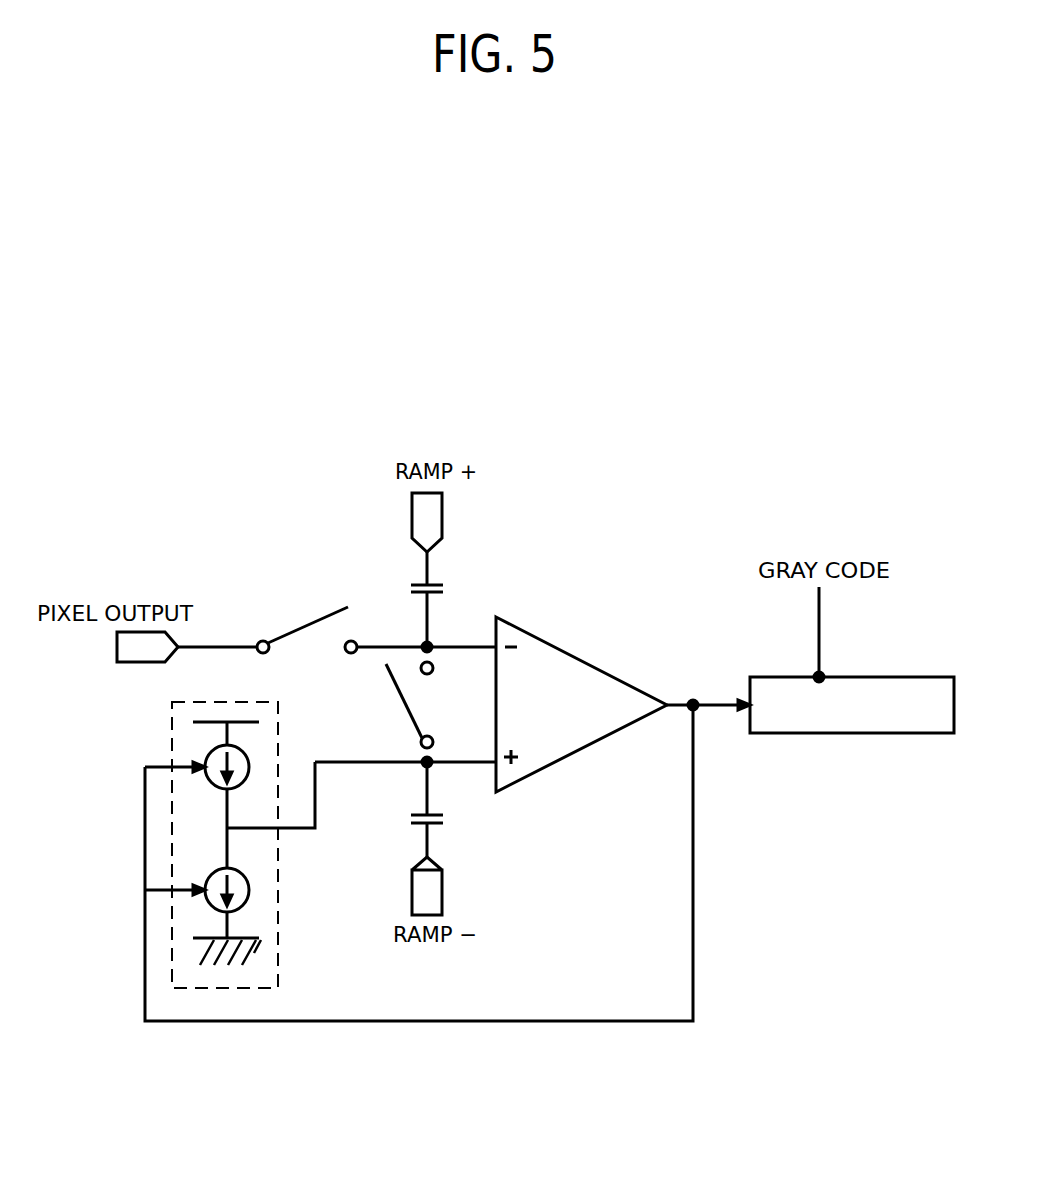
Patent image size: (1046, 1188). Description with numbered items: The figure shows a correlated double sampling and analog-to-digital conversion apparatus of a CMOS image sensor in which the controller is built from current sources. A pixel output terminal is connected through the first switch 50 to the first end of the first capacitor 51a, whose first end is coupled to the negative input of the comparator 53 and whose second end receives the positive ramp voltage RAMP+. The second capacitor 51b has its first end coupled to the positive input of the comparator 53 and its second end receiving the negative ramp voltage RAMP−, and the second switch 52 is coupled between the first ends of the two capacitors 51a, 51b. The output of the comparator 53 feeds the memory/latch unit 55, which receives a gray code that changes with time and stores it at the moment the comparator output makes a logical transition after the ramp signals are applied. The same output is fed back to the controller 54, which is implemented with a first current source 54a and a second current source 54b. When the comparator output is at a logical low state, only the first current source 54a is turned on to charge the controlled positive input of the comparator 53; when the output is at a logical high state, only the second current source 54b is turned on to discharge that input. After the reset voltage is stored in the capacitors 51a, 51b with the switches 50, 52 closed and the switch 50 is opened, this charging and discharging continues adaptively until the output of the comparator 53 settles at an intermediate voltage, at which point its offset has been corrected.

The first switch 50 is at (305, 620).
The first capacitor 51a is at (428, 583).
The second capacitor 51b is at (433, 827).
The second switch 52 is at (405, 700).
The comparator 53 is at (585, 660).
The controller 54 is at (218, 840).
The first current source 54a is at (248, 765).
The second current source 54b is at (248, 892).
The memory/latch unit 55 is at (862, 675).